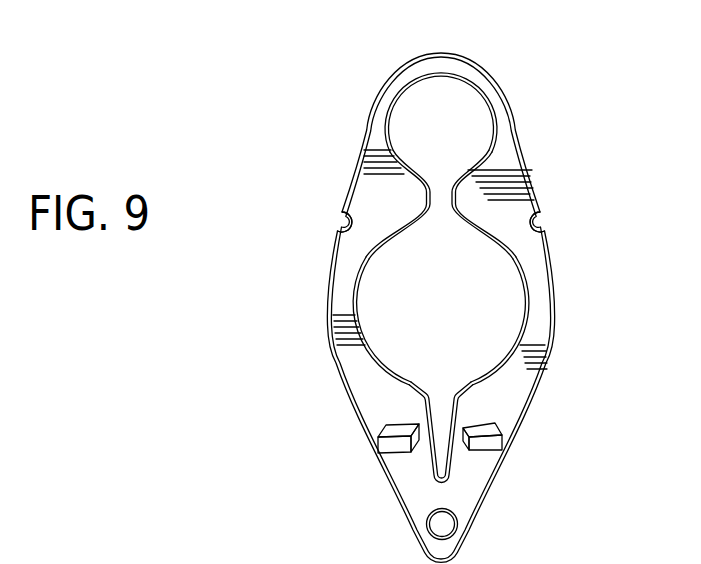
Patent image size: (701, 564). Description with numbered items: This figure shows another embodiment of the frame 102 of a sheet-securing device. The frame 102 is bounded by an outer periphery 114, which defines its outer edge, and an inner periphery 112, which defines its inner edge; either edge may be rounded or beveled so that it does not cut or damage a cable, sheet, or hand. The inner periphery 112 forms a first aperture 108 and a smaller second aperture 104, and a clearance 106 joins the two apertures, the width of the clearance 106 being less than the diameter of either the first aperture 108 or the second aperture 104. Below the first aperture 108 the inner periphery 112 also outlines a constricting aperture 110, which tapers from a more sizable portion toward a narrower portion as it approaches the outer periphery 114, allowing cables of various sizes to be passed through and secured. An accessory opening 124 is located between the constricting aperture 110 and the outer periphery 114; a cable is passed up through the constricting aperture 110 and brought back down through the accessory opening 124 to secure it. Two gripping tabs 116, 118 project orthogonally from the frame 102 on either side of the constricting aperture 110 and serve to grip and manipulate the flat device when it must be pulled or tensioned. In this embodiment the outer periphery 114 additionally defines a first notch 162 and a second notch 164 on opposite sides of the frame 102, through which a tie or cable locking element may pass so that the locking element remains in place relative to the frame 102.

The frame 102 is at (384, 307).
The second aperture 104 is at (418, 119).
The clearance 106 is at (440, 197).
The first aperture 108 is at (453, 333).
The constricting aperture 110 is at (443, 421).
The inner periphery 112 is at (366, 352).
The outer periphery 114 is at (329, 285).
The gripping tab 116 is at (507, 440).
The gripping tab 118 is at (380, 437).
The accessory opening 124 is at (437, 523).
The first notch 162 is at (543, 218).
The second notch 164 is at (345, 223).